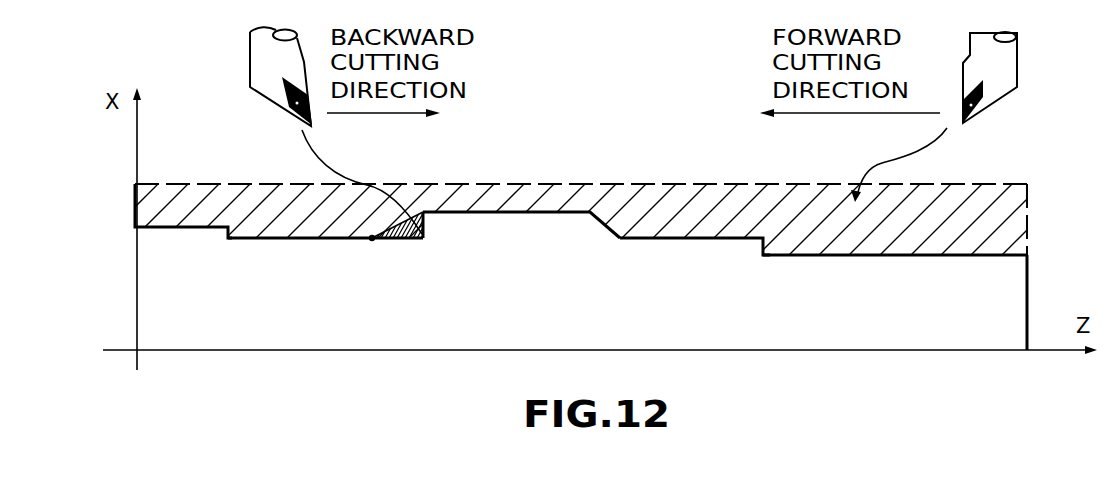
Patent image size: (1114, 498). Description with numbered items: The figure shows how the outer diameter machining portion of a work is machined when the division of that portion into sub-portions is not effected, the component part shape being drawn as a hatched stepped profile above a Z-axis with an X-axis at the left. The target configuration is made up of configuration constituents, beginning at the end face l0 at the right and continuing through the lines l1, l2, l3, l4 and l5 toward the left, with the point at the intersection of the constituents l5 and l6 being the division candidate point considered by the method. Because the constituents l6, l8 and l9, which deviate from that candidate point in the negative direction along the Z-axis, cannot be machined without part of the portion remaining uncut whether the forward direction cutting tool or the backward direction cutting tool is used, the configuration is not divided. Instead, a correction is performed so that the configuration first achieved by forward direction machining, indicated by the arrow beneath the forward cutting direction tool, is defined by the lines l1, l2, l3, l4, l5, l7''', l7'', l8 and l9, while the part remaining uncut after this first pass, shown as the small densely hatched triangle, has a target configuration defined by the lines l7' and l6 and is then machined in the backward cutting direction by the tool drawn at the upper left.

The workpiece end face segment l0 is at (1013, 302).
The configuration constituent line l1 is at (895, 268).
The configuration constituent line l2 is at (745, 252).
The configuration constituent line l3 is at (670, 252).
The configuration constituent line l4 is at (590, 228).
The configuration constituent line l5 is at (515, 226).
The configuration constituent line l6 is at (446, 226).
The configuration constituent line l7' is at (405, 238).
The configuration constituent line l7'' is at (300, 253).
The configuration constituent line l7''' is at (455, 248).
The configuration constituent line l8 is at (206, 242).
The configuration constituent line l9 is at (157, 221).